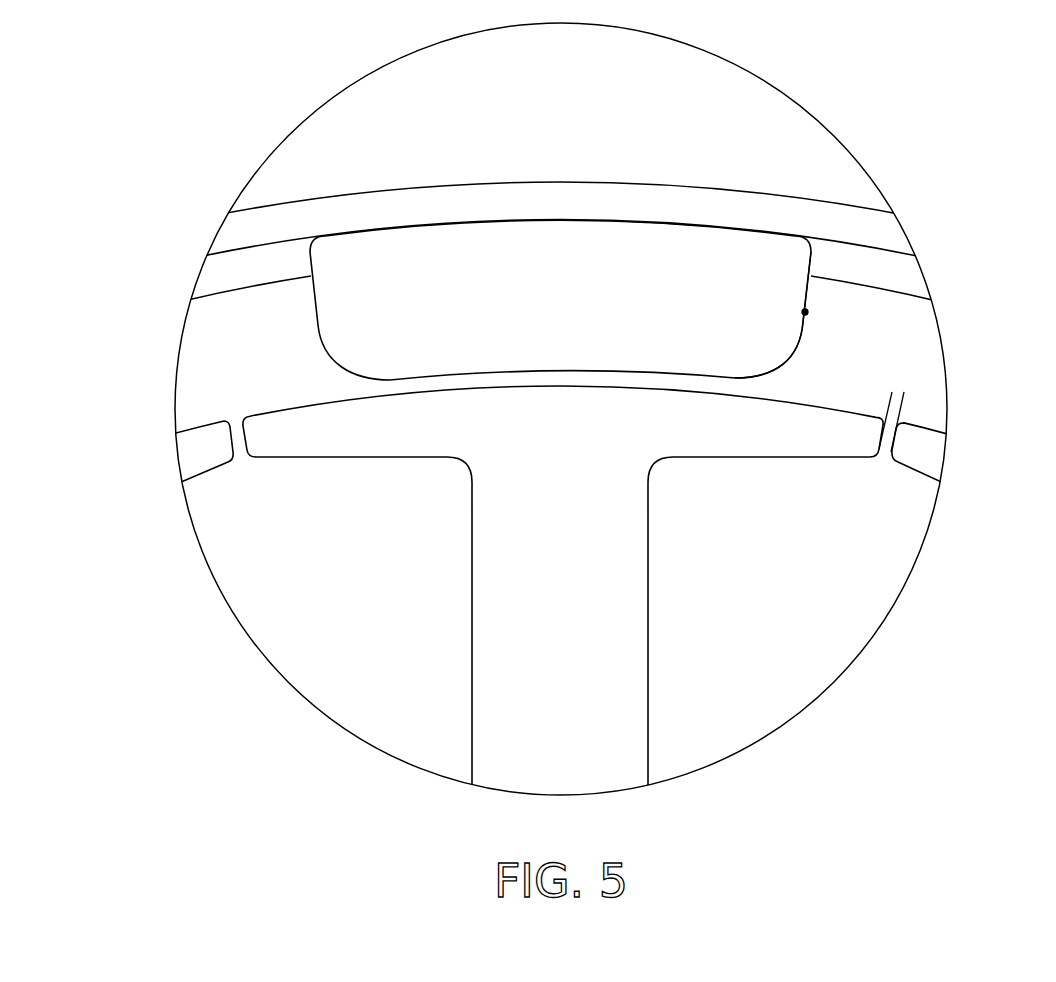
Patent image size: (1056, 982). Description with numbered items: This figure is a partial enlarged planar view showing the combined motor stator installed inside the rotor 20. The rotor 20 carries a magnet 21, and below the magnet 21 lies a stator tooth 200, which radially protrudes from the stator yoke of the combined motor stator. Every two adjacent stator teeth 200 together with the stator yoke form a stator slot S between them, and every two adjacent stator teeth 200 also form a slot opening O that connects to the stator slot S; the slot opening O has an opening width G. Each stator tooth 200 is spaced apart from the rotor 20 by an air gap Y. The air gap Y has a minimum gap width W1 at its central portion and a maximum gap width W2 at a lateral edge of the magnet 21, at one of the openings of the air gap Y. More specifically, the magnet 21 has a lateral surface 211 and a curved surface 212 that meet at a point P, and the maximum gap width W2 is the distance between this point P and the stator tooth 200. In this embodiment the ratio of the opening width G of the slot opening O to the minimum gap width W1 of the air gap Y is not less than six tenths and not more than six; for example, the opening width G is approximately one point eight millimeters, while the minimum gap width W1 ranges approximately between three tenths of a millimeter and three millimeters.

The rotor 20 is at (575, 167).
The magnet 21 is at (675, 263).
The lateral surface 211 is at (813, 298).
The curved surface 212 is at (775, 367).
The stator tooth 200 is at (600, 748).
The point P is at (805, 312).
The opening width G is at (847, 385).
The slot opening O is at (882, 450).
The stator slot S is at (793, 618).
The air gap Y is at (520, 380).
The minimum gap width W1 is at (560, 427).
The maximum gap width W2 is at (805, 312).